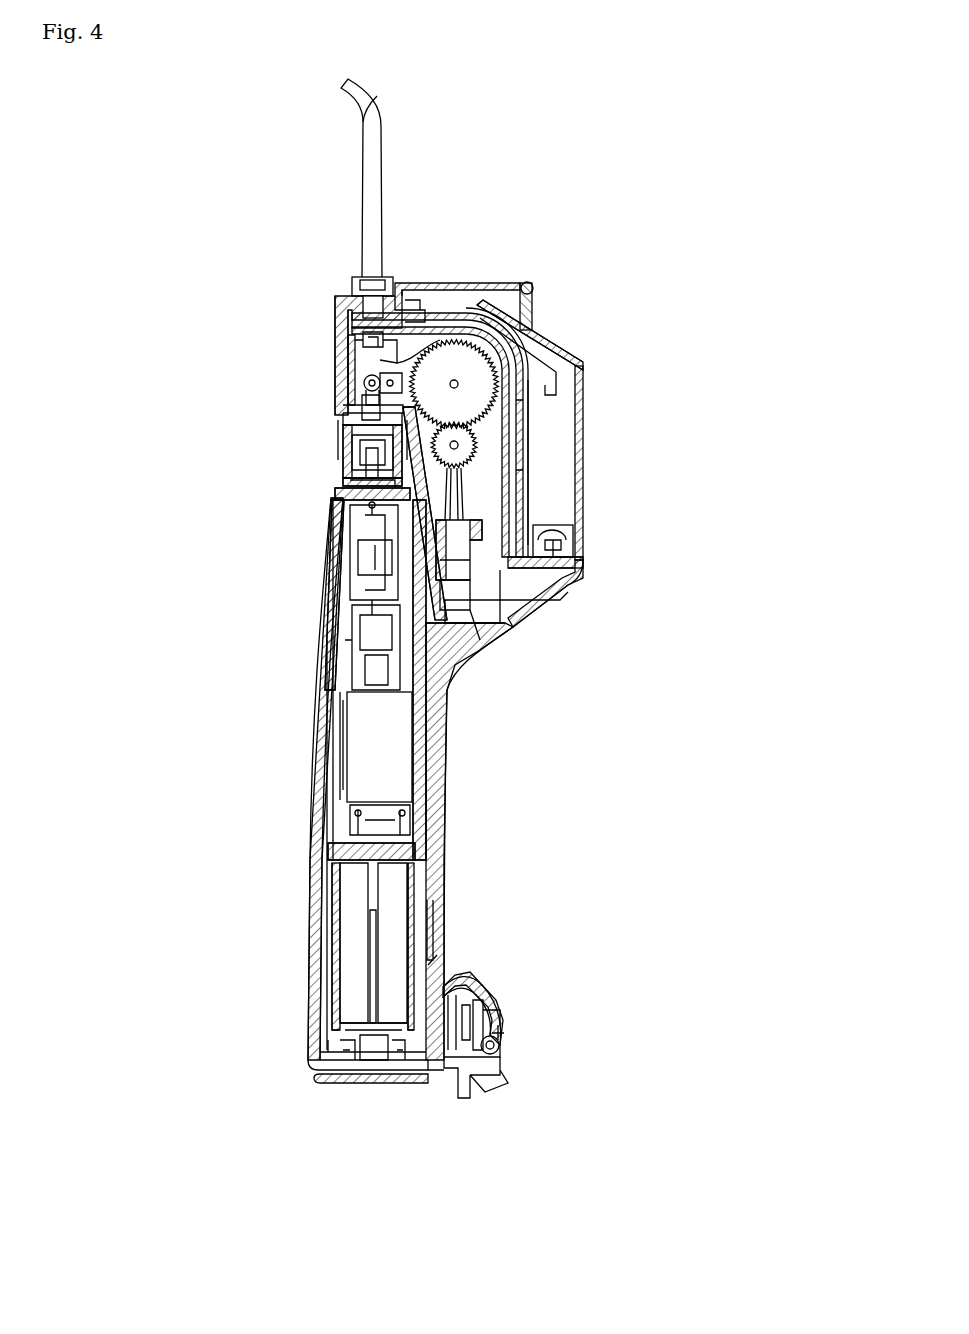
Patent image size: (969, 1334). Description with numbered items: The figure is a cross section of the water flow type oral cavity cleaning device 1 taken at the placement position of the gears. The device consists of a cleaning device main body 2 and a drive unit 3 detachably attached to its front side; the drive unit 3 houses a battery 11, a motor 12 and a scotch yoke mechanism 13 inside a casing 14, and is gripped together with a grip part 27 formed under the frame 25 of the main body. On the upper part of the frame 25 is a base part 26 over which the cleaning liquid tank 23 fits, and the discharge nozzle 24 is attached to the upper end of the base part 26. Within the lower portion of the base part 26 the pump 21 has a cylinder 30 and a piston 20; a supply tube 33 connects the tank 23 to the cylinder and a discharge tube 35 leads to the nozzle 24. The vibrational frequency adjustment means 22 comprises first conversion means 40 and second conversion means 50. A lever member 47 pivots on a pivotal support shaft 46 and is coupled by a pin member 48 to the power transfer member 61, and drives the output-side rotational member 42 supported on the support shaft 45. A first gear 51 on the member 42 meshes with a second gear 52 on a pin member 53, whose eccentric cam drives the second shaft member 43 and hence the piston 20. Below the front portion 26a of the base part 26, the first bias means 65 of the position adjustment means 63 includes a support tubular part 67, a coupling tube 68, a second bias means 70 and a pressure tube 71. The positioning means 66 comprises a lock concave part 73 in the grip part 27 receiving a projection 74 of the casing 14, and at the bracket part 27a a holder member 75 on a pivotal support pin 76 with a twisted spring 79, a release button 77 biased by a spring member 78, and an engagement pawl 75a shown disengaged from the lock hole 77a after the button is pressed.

The water flow type oral cavity cleaning device 1 is at (606, 230).
The cleaning device main body 2 is at (501, 673).
The drive unit 3 is at (297, 888).
The battery 11 is at (348, 946).
The motor 12 is at (357, 755).
The scotch yoke mechanism 13 is at (350, 655).
The casing 14 is at (324, 818).
The piston 20 is at (542, 548).
The pump 21 is at (486, 522).
The vibrational frequency adjustment means 22 is at (460, 322).
The cleaning liquid tank 23 is at (590, 415).
The discharge nozzle 24 is at (378, 160).
The frame 25 is at (496, 673).
The base part 26 is at (545, 620).
The front portion of the base part 26a is at (335, 310).
The grip part 27 is at (444, 852).
The bracket part 27a is at (500, 1026).
The cylinder 30 is at (562, 590).
The supply tube 33 is at (500, 630).
The discharge tube 35 is at (530, 444).
The first conversion means 40 is at (488, 325).
The output-side rotational member 42 is at (440, 358).
The second shaft member 43 is at (375, 502).
The support shaft 45 is at (458, 384).
The pivotal support shaft 46 is at (364, 360).
The lever member 47 is at (405, 328).
The pin member 48 is at (364, 384).
The second conversion means 50 is at (497, 452).
The first gear 51 is at (516, 353).
The second gear 52 is at (492, 470).
The pin member 53 is at (460, 448).
The power transfer member 61 is at (343, 405).
The position adjustment means 63 is at (372, 440).
The first bias means 65 is at (289, 476).
The positioning means 66 is at (570, 983).
The support tubular part 67 is at (345, 421).
The coupling tube 68 is at (342, 436).
The second bias means 70 is at (362, 455).
The pressure tube 71 is at (345, 481).
The lock concave part 73 is at (430, 925).
The projection 74 is at (440, 955).
The holder member 75 is at (372, 1085).
The engagement pawl 75a is at (470, 1084).
The pivotal support pin 76 is at (500, 1050).
The release button 77 is at (450, 992).
The lock hole 77a is at (490, 1076).
The spring member 78 is at (490, 1018).
The twisted spring 79 is at (505, 1036).